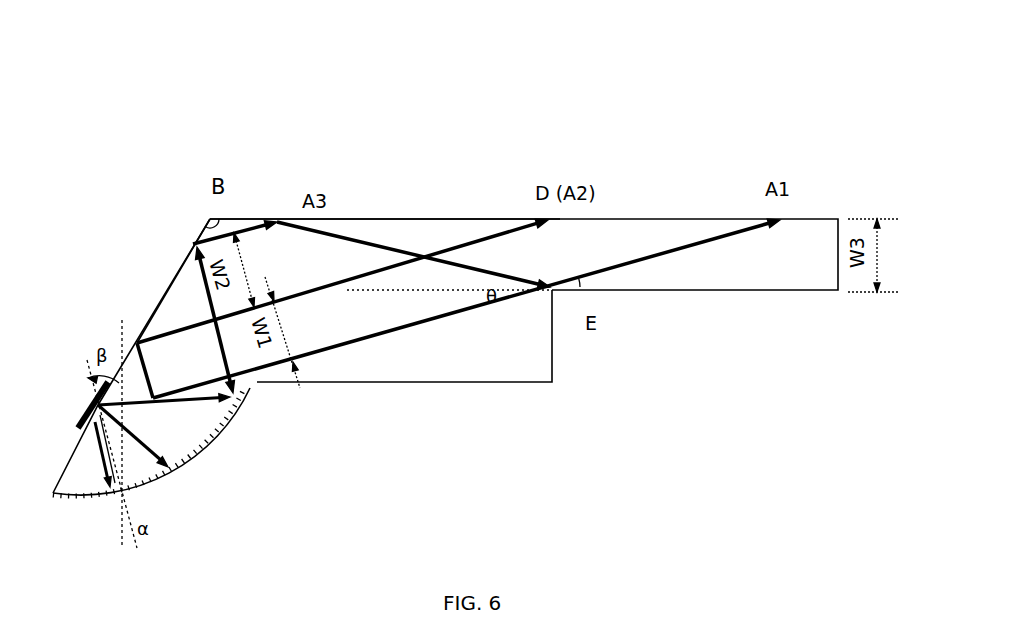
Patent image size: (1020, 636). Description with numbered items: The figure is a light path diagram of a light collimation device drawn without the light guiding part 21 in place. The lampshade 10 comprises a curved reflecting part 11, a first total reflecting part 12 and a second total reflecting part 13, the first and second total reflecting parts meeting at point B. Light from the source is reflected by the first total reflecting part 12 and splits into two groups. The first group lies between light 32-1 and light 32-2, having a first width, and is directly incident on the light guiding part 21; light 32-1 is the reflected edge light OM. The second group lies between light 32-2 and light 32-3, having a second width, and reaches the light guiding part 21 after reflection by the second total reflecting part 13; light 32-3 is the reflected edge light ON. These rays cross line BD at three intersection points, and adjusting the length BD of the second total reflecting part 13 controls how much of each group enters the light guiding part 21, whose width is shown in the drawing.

The lampshade 10 is at (387, 407).
The curved reflecting part 11 is at (217, 450).
The first total reflecting part 12 is at (163, 297).
The second total reflecting part 13 is at (378, 217).
The light guiding part 21 is at (687, 303).
The light 32-1 is at (645, 258).
The light 32-2 is at (453, 249).
The light 32-3 is at (247, 231).